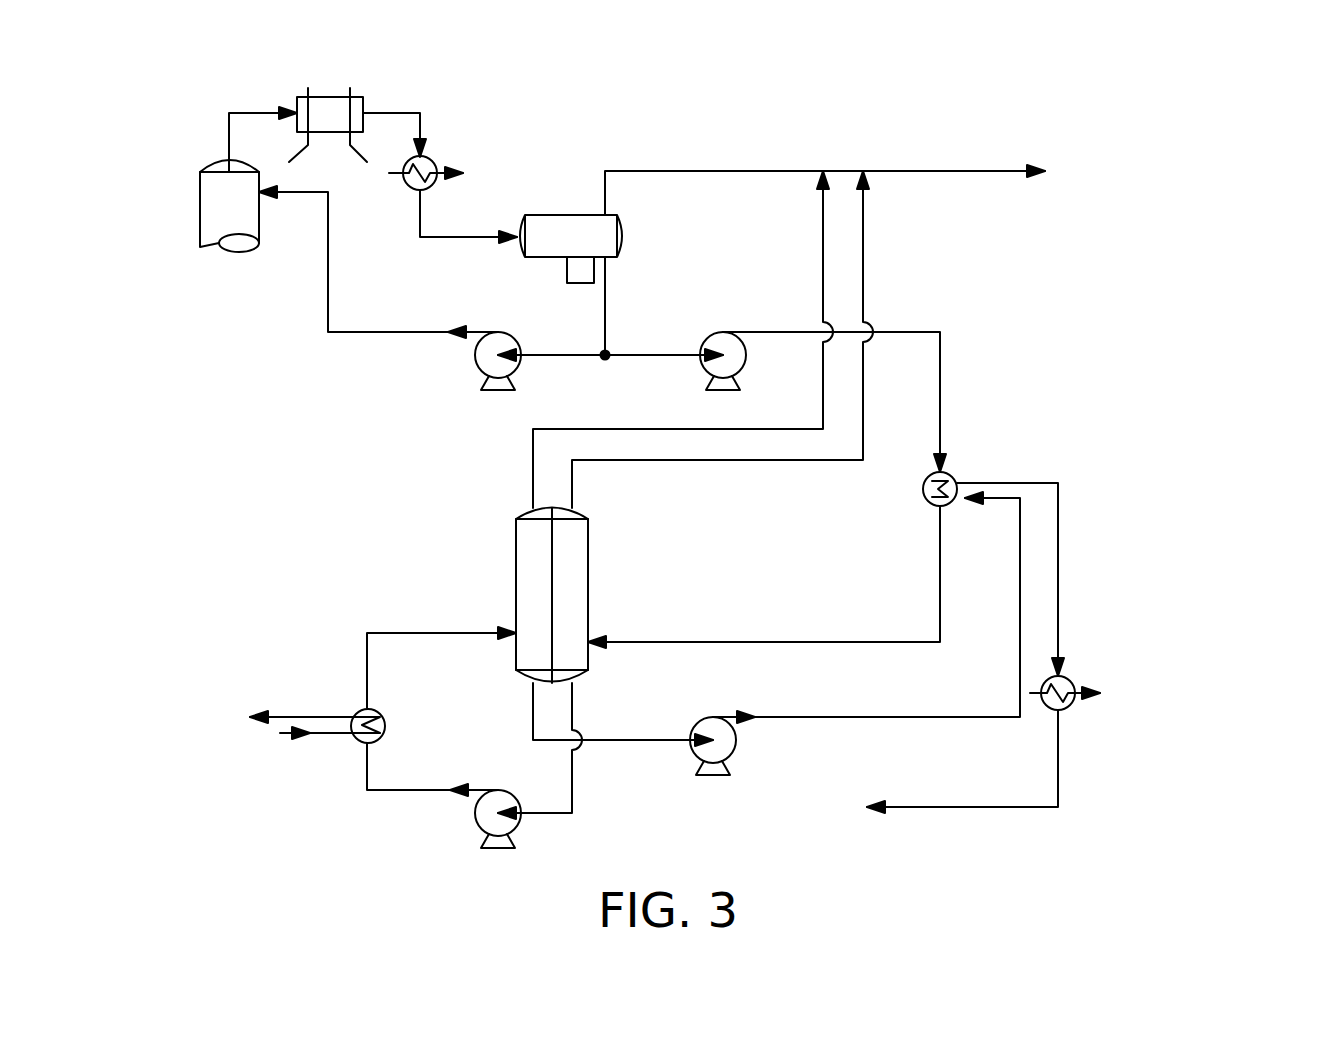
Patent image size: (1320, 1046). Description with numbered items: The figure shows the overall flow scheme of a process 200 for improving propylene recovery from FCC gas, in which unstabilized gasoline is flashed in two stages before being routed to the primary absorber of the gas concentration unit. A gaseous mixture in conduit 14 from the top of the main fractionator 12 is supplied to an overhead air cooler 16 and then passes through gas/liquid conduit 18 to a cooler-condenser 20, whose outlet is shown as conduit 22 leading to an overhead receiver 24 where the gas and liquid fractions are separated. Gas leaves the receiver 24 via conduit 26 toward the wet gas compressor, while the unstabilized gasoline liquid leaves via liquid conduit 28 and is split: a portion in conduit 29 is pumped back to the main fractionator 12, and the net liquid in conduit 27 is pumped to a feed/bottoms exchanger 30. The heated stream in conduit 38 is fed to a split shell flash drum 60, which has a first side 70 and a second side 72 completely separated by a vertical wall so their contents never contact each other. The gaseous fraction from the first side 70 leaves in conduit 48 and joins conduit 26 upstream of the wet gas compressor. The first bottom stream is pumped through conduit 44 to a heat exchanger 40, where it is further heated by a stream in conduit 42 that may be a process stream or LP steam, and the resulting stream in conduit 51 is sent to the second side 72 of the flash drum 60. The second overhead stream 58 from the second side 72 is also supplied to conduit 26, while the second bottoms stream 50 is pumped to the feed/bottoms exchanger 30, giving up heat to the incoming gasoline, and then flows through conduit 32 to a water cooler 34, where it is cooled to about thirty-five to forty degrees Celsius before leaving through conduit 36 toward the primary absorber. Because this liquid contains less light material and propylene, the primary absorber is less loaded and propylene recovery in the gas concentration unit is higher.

The process 200 is at (1237, 160).
The main fractionator 12 is at (200, 210).
The conduit 14 is at (262, 110).
The overhead air cooler 16 is at (333, 97).
The gas/liquid conduit 18 is at (400, 110).
The cooler-condenser 20 is at (432, 160).
The cooled effluent line 22 is at (419, 213).
The overhead receiver 24 is at (575, 215).
The conduit 26 is at (769, 171).
The conduit 27 is at (651, 360).
The liquid conduit 28 is at (607, 287).
The conduit 29 is at (564, 360).
The feed/bottoms exchanger 30 is at (950, 473).
The mixer outlet line 32 is at (1060, 580).
The water cooler 34 is at (1068, 681).
The product line 36 is at (963, 808).
The conduit 38 is at (940, 558).
The heat exchanger 40 is at (376, 709).
The conduit 42 is at (327, 735).
The conduit 44 is at (413, 790).
The conduit 48 is at (865, 260).
The second bottoms stream 50 is at (848, 717).
The conduit 51 is at (367, 659).
The second overhead stream 58 is at (823, 233).
The split shell flash drum 60 is at (555, 596).
The first side 70 is at (582, 596).
The second side 72 is at (523, 596).